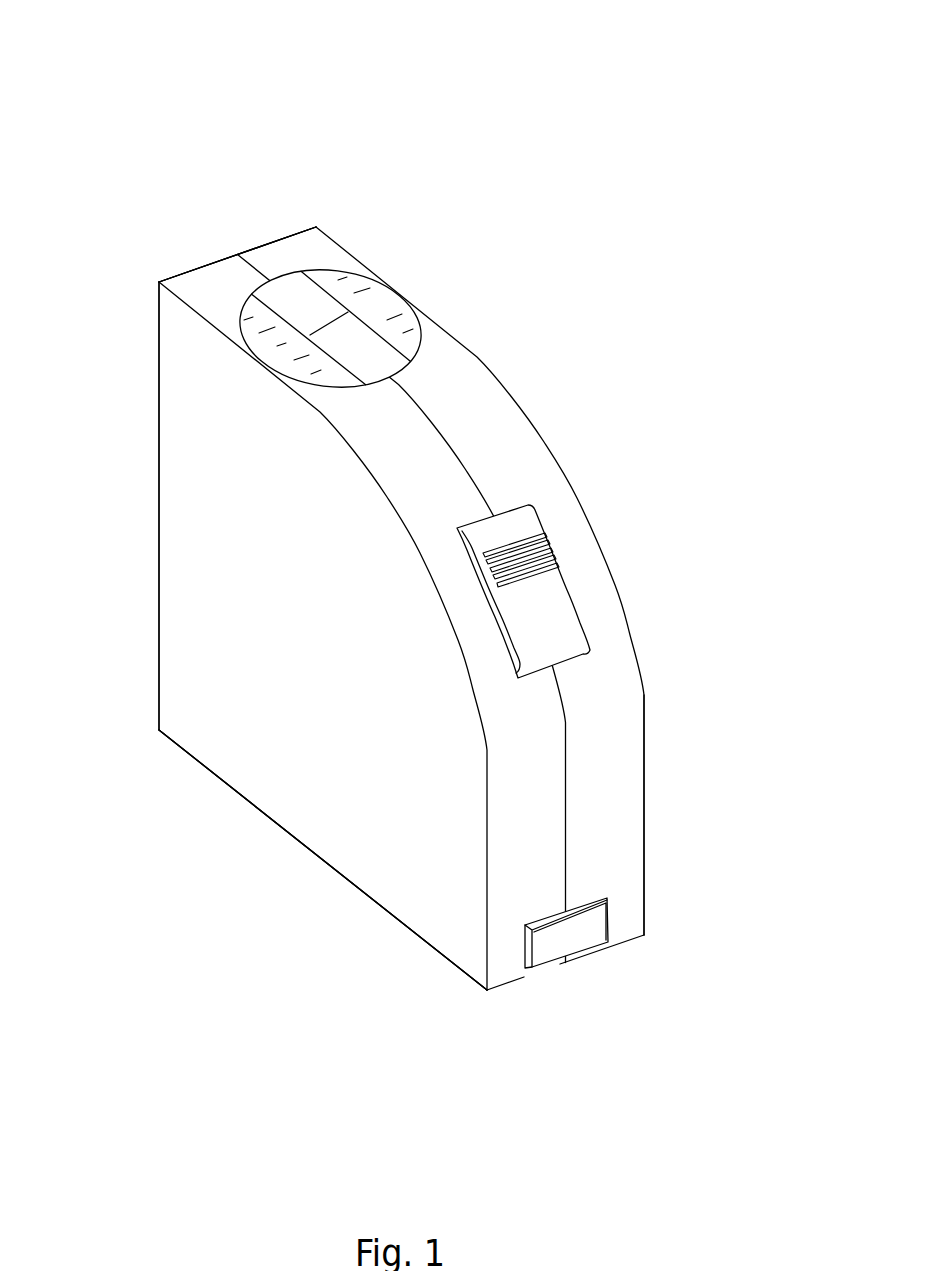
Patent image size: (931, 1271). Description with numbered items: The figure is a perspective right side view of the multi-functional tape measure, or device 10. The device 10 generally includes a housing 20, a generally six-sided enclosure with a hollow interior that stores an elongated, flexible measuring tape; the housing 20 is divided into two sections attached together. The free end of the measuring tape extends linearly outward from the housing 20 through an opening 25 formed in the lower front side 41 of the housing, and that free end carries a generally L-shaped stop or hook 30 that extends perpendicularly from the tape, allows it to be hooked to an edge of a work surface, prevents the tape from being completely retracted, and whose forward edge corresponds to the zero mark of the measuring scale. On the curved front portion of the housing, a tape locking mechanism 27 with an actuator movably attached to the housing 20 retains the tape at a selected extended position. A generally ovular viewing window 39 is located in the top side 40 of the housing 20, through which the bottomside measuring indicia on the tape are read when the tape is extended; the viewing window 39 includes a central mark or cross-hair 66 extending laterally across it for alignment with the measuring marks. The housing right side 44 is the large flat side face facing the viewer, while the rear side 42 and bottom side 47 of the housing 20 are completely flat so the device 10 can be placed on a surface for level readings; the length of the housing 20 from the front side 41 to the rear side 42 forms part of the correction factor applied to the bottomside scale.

The device 10 is at (712, 78).
The housing 20 is at (150, 682).
The opening 25 is at (605, 897).
The tape locking mechanism 27 is at (560, 607).
The hook 30 is at (578, 935).
The viewing window 39 is at (360, 278).
The top side 40 is at (317, 245).
The front side 41 is at (620, 767).
The rear side 42 is at (158, 488).
The housing right side 44 is at (205, 740).
The bottom side 47 is at (333, 870).
The cross-hair 66 is at (330, 323).